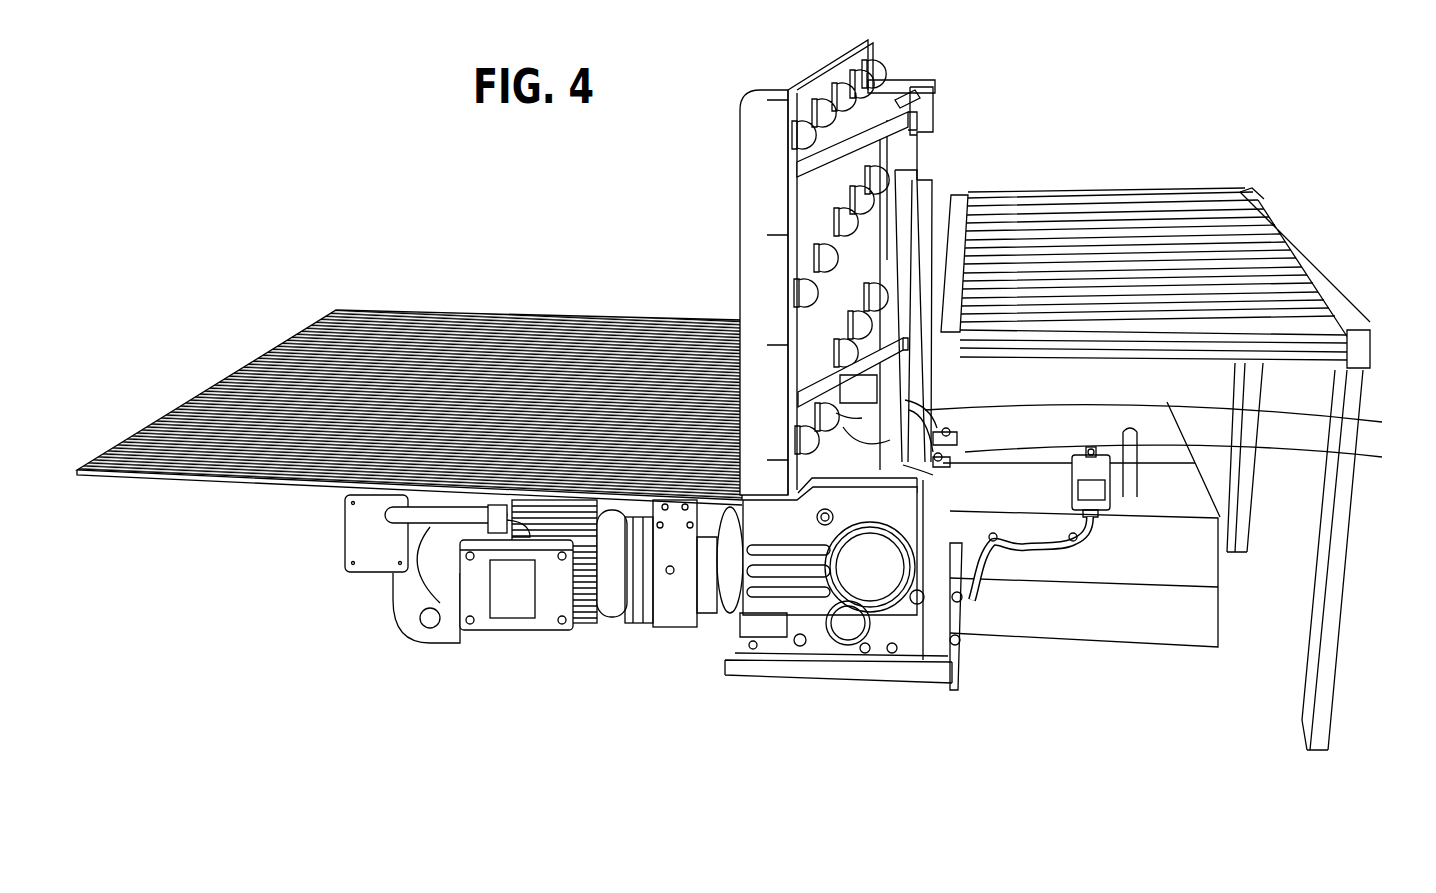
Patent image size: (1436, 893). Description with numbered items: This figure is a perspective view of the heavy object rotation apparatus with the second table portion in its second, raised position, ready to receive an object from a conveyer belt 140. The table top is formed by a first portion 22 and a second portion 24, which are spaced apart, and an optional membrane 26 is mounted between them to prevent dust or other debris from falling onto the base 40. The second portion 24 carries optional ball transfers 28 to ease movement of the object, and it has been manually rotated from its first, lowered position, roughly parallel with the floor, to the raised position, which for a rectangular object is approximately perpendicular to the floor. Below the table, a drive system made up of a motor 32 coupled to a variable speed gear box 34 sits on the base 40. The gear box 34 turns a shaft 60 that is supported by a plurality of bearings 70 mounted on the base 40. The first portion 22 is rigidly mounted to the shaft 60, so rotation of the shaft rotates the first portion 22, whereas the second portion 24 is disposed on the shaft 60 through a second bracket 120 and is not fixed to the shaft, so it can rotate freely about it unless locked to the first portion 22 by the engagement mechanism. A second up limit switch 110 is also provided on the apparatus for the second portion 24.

The first portion 22 is at (310, 455).
The second portion 24 is at (828, 78).
The membrane 26 is at (848, 433).
The ball transfers 28 is at (790, 285).
The motor 32 is at (542, 605).
The variable speed gear box 34 is at (882, 575).
The base 40 is at (1157, 618).
The shaft 60 is at (1169, 422).
The bearings 70 is at (1189, 462).
The second up limit switch 110 is at (1087, 497).
The second bracket 120 is at (897, 265).
The conveyer belt 140 is at (1252, 245).